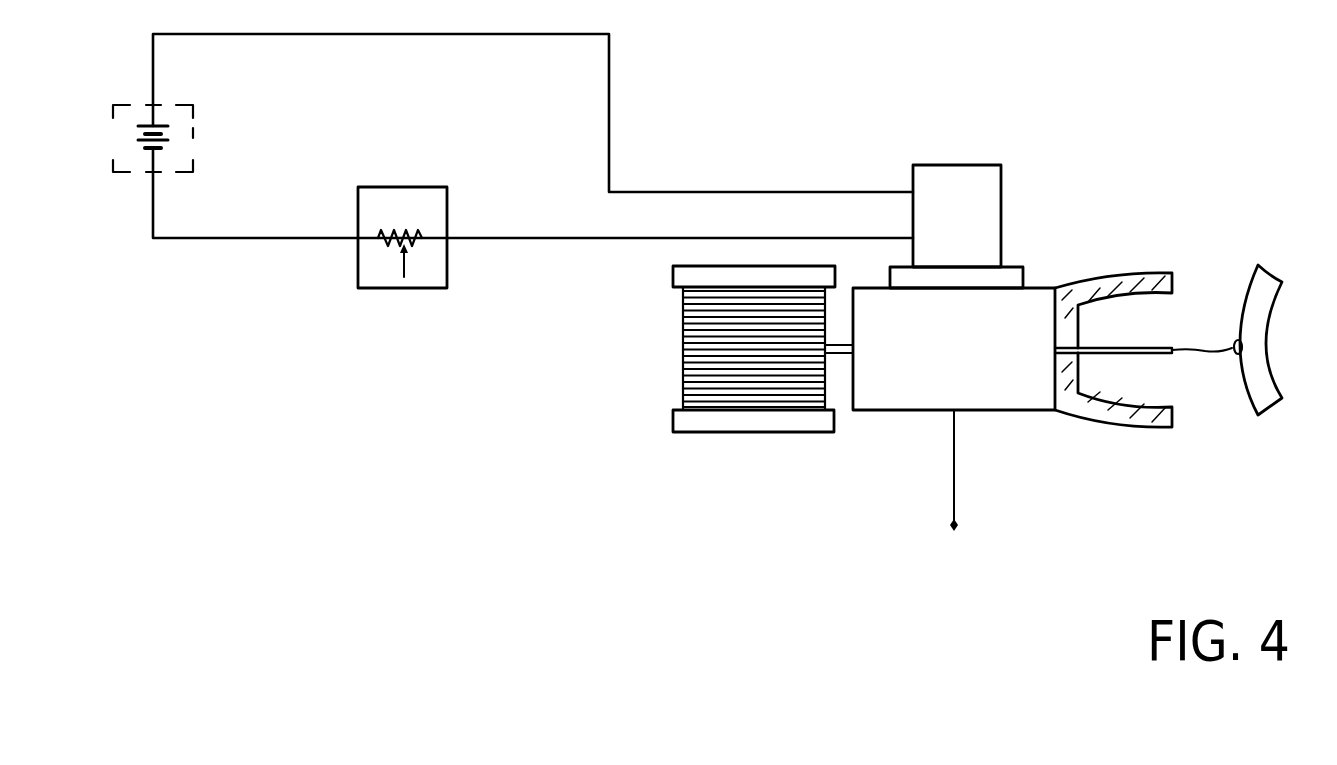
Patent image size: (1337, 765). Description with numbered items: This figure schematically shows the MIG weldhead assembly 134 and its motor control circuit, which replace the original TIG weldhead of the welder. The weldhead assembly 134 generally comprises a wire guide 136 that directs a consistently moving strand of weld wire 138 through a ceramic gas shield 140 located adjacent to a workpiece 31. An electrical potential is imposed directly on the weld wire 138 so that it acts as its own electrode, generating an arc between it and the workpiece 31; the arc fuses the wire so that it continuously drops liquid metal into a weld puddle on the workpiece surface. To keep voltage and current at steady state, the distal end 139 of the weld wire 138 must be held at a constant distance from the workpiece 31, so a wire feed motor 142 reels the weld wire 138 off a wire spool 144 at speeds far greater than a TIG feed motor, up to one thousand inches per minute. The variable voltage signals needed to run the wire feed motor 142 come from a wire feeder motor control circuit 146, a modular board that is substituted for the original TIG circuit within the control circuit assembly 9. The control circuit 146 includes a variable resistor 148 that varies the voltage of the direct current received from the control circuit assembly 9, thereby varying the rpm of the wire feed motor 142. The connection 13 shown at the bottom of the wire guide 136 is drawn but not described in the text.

The control circuit assembly 9 is at (113, 138).
The lead to ground / electrical connection 13 is at (954, 530).
The workpiece 31 is at (1263, 393).
The MIG weldhead assembly 134 is at (1083, 220).
The wire guide 136 is at (933, 388).
The weld wire 138 is at (1117, 355).
The distal end 139 is at (1175, 348).
The ceramic gas shield 140 is at (1136, 430).
The wire feed motor 142 is at (971, 234).
The wire spool 144 is at (691, 424).
The wire feeder motor control circuit 146 is at (368, 289).
The variable resistor 148 is at (409, 246).